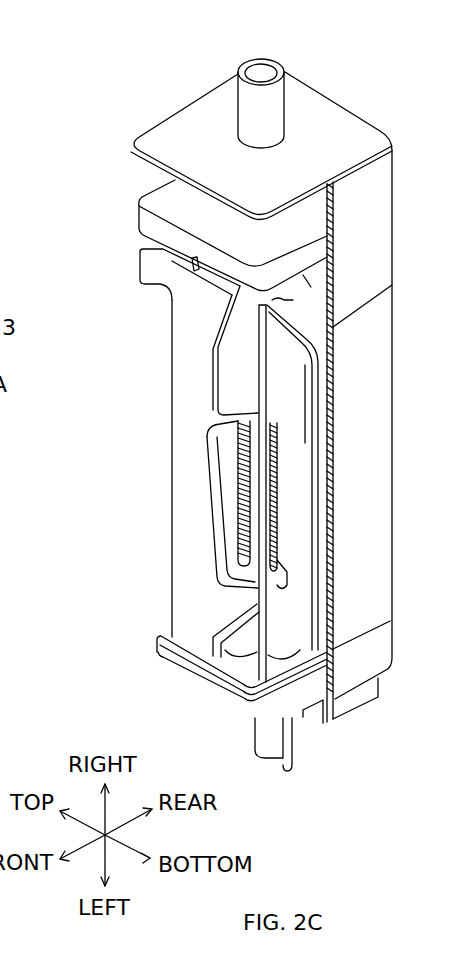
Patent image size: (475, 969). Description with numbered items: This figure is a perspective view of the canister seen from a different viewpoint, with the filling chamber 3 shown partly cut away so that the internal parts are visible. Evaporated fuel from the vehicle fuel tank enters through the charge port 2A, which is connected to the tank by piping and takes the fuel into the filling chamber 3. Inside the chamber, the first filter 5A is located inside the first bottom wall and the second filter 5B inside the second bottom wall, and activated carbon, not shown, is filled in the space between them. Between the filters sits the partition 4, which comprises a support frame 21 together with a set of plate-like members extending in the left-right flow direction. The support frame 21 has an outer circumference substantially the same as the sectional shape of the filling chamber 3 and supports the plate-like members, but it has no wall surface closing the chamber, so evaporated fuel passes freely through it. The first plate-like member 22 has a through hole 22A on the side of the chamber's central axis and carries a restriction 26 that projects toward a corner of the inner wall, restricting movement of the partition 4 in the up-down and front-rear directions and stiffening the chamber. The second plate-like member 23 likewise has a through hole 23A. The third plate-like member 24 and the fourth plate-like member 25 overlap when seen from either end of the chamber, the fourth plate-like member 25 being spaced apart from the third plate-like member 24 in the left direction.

The charge port 2A is at (275, 102).
The filling chamber 3 is at (380, 262).
The partition 4 is at (158, 449).
The first filter 5A is at (165, 200).
The second filter 5B is at (173, 670).
The support frame 21 is at (158, 628).
The first plate-like member 22 is at (190, 344).
The through hole 22A is at (218, 515).
The second plate-like member 23 is at (300, 397).
The through hole 23A is at (287, 470).
The third plate-like member 24 is at (225, 367).
The fourth plate-like member 25 is at (232, 627).
The restriction 26 is at (150, 268).